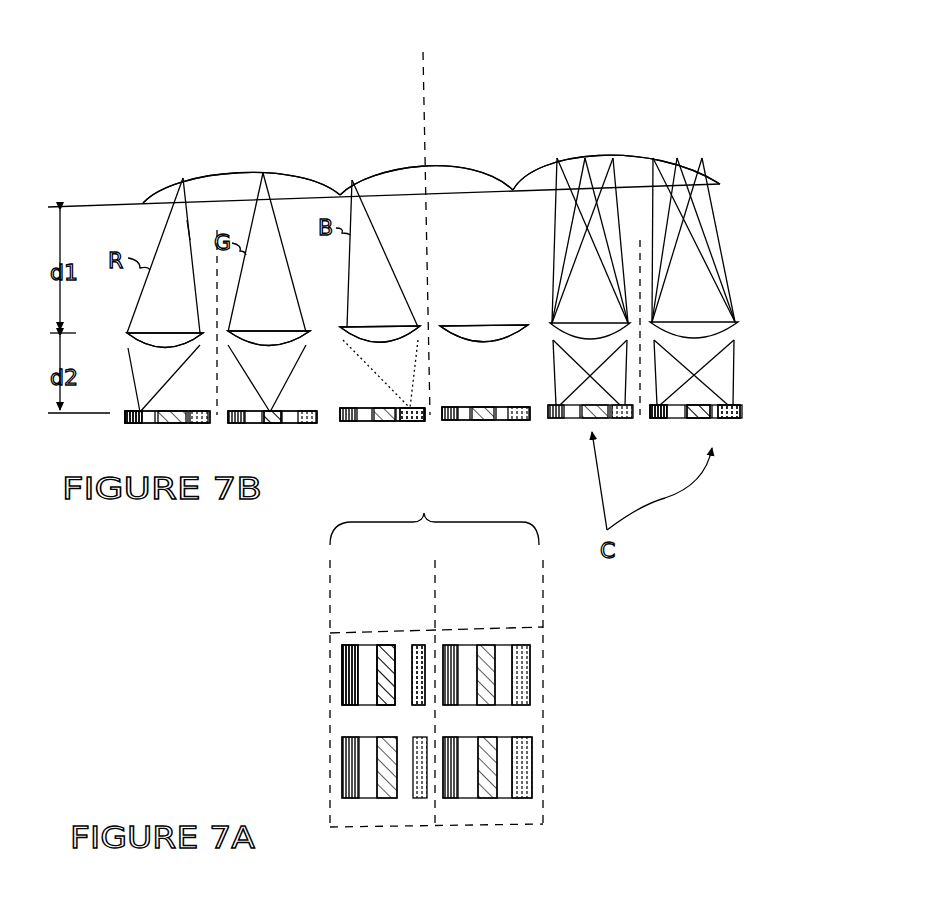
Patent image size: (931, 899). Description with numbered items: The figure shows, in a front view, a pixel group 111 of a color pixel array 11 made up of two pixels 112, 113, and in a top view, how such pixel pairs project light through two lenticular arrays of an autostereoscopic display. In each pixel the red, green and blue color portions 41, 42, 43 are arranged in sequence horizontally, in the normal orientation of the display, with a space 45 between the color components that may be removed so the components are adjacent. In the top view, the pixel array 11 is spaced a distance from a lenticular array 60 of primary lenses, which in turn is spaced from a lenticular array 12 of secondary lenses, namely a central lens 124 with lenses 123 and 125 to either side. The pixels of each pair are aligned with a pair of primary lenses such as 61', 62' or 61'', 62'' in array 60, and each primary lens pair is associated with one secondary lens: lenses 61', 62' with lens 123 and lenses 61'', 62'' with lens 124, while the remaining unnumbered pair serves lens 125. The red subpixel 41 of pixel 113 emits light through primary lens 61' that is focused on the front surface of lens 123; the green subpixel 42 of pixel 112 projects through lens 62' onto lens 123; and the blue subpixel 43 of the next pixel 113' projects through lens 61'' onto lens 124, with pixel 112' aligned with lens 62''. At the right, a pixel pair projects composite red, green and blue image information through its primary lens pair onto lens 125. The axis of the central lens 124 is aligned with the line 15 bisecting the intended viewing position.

In FIG. 7B, the pixel array 11 is at (798, 410).
In FIG. 7B, the lenticular array 12 is at (755, 162).
In FIG. 7B, the line bisecting the intended viewing position 15 is at (437, 48).
In FIG. 7B, the red component subpixel 41 is at (130, 425).
In FIG. 7A, the red component subpixel 41 is at (344, 645).
In FIG. 7B, the green component subpixel 42 is at (274, 411).
In FIG. 7A, the green component subpixel 42 is at (385, 645).
In FIG. 7B, the blue component subpixel 43 is at (410, 408).
In FIG. 7A, the blue component subpixel 43 is at (417, 645).
In FIG. 7A, the space between the color components 45 is at (406, 705).
In FIG. 7B, the lenticular array of primary lenses 60 is at (762, 320).
In FIG. 7B, the primary lens 61' is at (144, 344).
In FIG. 7B, the primary lens 62' is at (269, 316).
In FIG. 7B, the primary lens 61'' is at (380, 314).
In FIG. 7B, the primary lens 62'' is at (484, 313).
In FIG. 7A, the pixel group 111 is at (434, 515).
In FIG. 7B, the pixel 112 is at (272, 436).
In FIG. 7A, the pixel 112 is at (493, 759).
In FIG. 7B, the pixel 113 is at (167, 436).
In FIG. 7A, the pixel 113 is at (380, 764).
In FIG. 7B, the pixel 112' is at (486, 430).
In FIG. 7B, the pixel 113' is at (382, 431).
In FIG. 7B, the secondary lens 123 is at (167, 196).
In FIG. 7B, the central lens 124 is at (418, 164).
In FIG. 7B, the secondary lens 125 is at (575, 161).